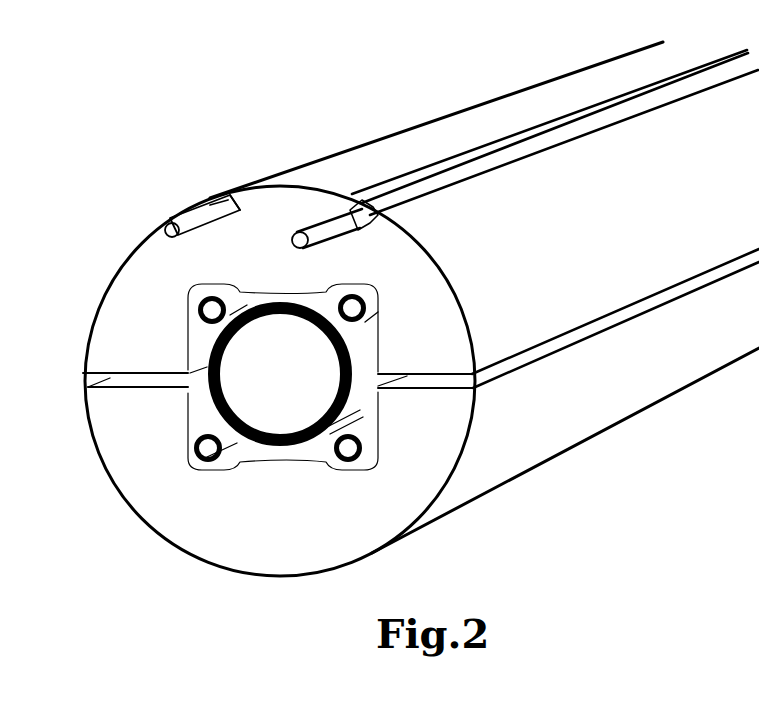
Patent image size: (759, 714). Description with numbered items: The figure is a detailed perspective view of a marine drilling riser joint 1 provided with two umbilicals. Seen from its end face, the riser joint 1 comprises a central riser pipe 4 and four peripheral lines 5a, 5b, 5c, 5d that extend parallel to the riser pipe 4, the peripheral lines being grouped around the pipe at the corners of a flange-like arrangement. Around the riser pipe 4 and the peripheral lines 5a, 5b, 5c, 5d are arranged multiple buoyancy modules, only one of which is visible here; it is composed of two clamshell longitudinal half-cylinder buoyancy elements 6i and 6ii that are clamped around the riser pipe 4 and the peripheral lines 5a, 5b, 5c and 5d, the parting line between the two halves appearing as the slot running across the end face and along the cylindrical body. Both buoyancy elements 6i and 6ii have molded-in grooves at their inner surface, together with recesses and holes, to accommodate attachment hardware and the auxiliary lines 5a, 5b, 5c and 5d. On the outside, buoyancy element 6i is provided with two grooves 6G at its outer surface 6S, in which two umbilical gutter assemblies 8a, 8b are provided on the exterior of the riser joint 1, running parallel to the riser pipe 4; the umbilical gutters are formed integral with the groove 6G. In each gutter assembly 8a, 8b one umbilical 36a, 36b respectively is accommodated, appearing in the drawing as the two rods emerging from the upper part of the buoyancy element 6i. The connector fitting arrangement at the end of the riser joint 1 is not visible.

The marine drilling riser joint 1 is at (263, 143).
The riser pipe 4 is at (280, 374).
The peripheral line 5a is at (212, 309).
The peripheral line 5b is at (357, 310).
The peripheral line 5c is at (350, 448).
The peripheral line 5d is at (212, 437).
The groove 6G is at (363, 178).
The outer surface 6S is at (484, 297).
The buoyancy element 6i is at (421, 311).
The buoyancy element 6ii is at (423, 384).
The umbilical gutter assembly 8a is at (232, 224).
The umbilical gutter assembly 8b is at (368, 241).
The umbilical 36a is at (197, 218).
The umbilical 36b is at (328, 232).